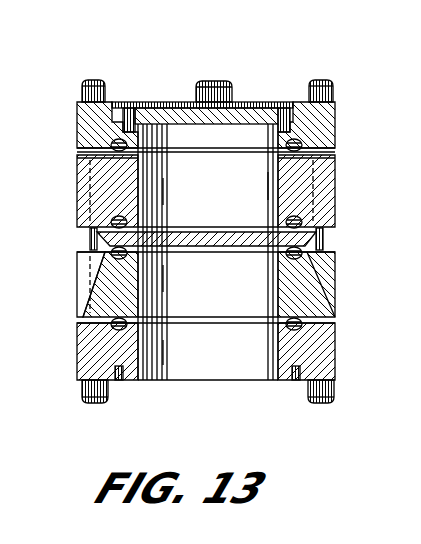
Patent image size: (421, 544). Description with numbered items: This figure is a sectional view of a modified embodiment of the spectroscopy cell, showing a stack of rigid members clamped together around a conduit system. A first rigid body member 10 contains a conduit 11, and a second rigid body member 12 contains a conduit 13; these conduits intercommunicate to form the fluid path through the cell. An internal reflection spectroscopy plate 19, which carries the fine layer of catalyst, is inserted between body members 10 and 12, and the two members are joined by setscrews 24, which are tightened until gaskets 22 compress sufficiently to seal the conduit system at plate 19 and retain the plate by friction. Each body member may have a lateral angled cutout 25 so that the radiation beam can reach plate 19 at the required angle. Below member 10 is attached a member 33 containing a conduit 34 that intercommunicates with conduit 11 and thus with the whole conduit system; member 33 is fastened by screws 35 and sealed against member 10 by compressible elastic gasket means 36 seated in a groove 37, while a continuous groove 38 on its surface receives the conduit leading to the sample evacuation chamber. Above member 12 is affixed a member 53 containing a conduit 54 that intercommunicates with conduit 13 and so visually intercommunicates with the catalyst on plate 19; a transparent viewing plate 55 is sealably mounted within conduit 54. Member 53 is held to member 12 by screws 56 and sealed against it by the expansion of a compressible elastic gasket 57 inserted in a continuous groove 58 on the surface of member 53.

The first rigid body member 10 is at (337, 302).
The conduit 11 is at (210, 299).
The second rigid body member 12 is at (337, 190).
The conduit 13 is at (212, 198).
The internal reflection spectroscopy plate 19 is at (325, 238).
The gaskets 22 is at (90, 242).
The setscrews 24 is at (337, 163).
The lateral angled cutout 25 is at (97, 298).
The member 33 is at (337, 354).
The conduit 34 is at (215, 353).
The screws 35 is at (94, 404).
The compressible elastic gasket means 36 is at (288, 332).
The groove 37 is at (113, 324).
The continuous groove 38 is at (118, 382).
The member 53 is at (78, 116).
The conduit 54 is at (158, 104).
The transparent viewing plate 55 is at (238, 114).
The screws 56 is at (93, 79).
The compressible elastic gasket 57 is at (306, 147).
The continuous groove 58 is at (318, 142).